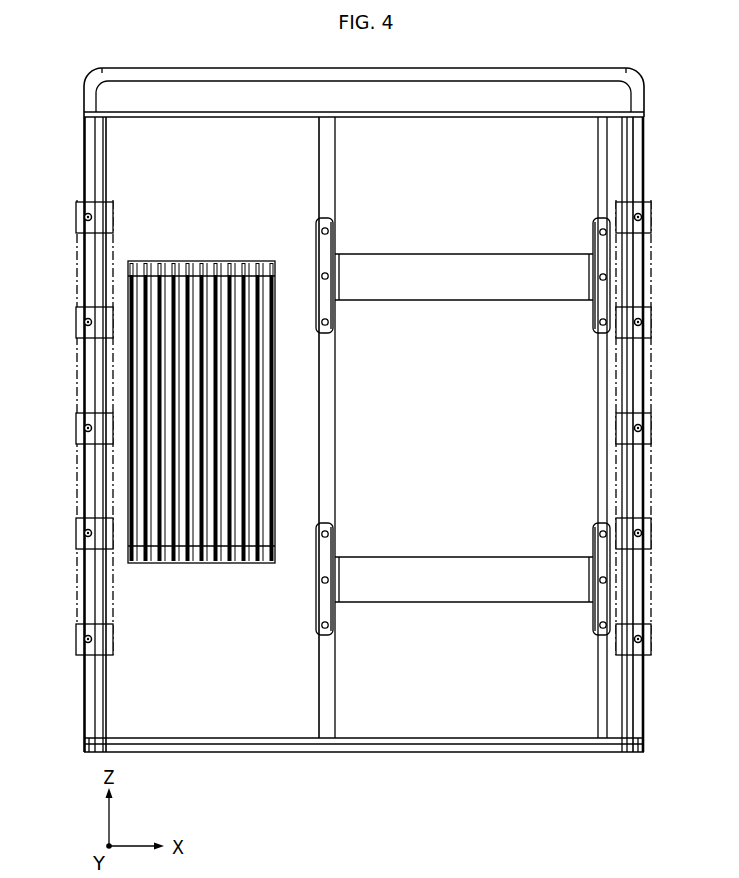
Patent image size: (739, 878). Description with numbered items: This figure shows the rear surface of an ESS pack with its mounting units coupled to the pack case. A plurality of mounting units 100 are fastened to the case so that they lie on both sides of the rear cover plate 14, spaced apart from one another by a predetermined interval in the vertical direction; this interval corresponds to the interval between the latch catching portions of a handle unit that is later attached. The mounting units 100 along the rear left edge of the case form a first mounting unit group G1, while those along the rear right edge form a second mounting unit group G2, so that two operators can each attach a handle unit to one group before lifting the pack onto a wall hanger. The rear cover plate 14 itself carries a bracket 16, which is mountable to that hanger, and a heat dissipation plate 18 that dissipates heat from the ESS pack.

The rear cover plate 14 is at (577, 149).
The bracket 16 is at (557, 275).
The heat dissipation plate 18 is at (138, 279).
The mounting unit 100 is at (85, 217).
The first mounting unit group G1 is at (77, 361).
The second mounting unit group G2 is at (652, 360).